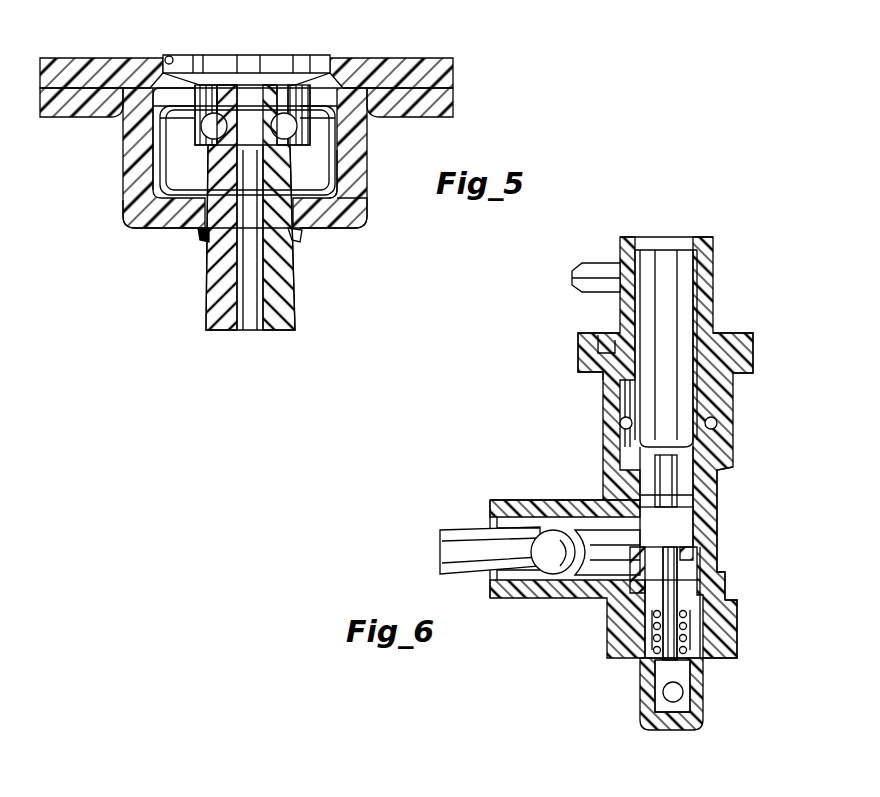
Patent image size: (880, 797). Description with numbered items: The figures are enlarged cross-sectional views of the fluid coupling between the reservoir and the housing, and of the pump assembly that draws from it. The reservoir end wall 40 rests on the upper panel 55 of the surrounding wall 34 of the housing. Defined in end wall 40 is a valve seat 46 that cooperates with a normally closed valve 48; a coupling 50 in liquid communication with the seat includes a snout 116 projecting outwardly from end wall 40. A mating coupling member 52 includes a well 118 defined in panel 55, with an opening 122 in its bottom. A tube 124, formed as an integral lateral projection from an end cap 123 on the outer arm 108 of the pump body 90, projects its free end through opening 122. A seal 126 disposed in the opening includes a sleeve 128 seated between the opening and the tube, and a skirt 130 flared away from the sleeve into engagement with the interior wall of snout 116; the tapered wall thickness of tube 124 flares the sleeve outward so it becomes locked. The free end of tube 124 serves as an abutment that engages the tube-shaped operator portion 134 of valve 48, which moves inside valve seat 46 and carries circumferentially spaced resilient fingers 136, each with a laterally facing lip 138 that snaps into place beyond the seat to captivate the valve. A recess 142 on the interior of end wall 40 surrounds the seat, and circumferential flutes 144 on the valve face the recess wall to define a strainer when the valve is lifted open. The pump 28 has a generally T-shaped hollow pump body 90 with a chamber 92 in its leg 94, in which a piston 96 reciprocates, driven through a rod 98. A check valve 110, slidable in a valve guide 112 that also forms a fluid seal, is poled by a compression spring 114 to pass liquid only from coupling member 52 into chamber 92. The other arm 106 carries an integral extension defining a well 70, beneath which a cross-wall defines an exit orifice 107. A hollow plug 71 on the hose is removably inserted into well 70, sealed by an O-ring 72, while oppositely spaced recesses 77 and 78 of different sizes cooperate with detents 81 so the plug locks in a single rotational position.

In FIG. 6, the pump 28 is at (497, 503).
In FIG. 5, the surrounding wall 34 is at (60, 118).
In FIG. 5, the reservoir end wall 40 is at (386, 62).
In FIG. 5, the valve seat 46 is at (208, 84).
In FIG. 5, the valve 48 is at (273, 60).
In FIG. 5, the coupling 50 is at (133, 203).
In FIG. 5, the coupling member 52 is at (356, 186).
In FIG. 5, the panel 55 is at (415, 85).
In FIG. 6, the well 70 is at (717, 407).
In FIG. 6, the plug 71 is at (715, 270).
In FIG. 6, the O-ring 72 is at (702, 432).
In FIG. 6, the recess 77 is at (735, 333).
In FIG. 6, the recess 78 is at (592, 338).
In FIG. 6, the detents 81 is at (608, 342).
In FIG. 6, the pump body 90 is at (545, 500).
In FIG. 6, the chamber 92 is at (562, 587).
In FIG. 6, the leg 94 is at (540, 600).
In FIG. 6, the piston 96 is at (520, 594).
In FIG. 6, the rod 98 is at (450, 533).
In FIG. 6, the arm 106 is at (722, 524).
In FIG. 6, the exit orifice 107 is at (648, 507).
In FIG. 6, the outer arm 108 is at (732, 624).
In FIG. 6, the check valve 110 is at (690, 660).
In FIG. 6, the valve guide 112 is at (632, 614).
In FIG. 6, the compression spring 114 is at (655, 667).
In FIG. 5, the snout 116 is at (356, 212).
In FIG. 5, the well 118 is at (152, 134).
In FIG. 5, the opening 122 is at (295, 235).
In FIG. 6, the end cap 123 is at (705, 700).
In FIG. 5, the tube 124 is at (294, 295).
In FIG. 5, the seal 126 is at (183, 230).
In FIG. 5, the sleeve 128 is at (205, 242).
In FIG. 5, the skirt 130 is at (167, 164).
In FIG. 5, the operator portion 134 is at (296, 72).
In FIG. 5, the resilient fingers 136 is at (245, 72).
In FIG. 5, the lip 138 is at (336, 148).
In FIG. 5, the recess 142 is at (168, 58).
In FIG. 5, the flutes 144 is at (330, 58).